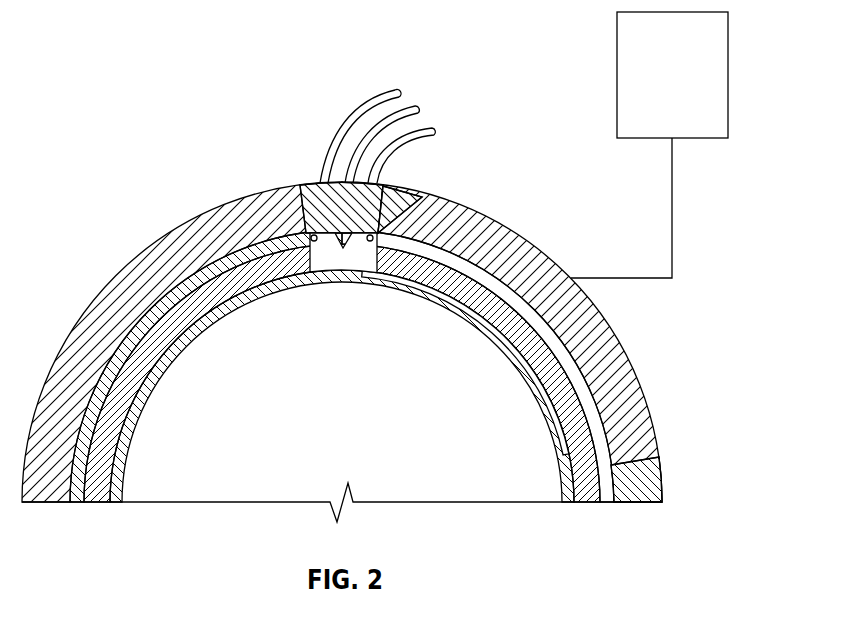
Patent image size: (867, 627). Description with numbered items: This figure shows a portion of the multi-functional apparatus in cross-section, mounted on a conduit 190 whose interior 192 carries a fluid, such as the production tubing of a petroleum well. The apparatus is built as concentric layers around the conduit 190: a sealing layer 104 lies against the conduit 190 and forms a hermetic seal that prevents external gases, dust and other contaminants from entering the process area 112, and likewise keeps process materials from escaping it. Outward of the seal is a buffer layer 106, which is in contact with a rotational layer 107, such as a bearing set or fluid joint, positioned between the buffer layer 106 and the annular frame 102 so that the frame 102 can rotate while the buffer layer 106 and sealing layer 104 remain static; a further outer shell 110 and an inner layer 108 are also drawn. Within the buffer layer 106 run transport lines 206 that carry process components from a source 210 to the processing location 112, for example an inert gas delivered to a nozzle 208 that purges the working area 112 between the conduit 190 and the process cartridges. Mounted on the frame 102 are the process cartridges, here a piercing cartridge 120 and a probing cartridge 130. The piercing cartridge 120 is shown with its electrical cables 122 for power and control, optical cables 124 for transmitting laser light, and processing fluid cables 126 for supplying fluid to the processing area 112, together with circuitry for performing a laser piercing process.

The frame 102 is at (612, 325).
The sealing layer 104 is at (170, 345).
The buffer layer 106 is at (532, 357).
The rotational layer 107 is at (585, 396).
The inner conductive layer 108 is at (487, 327).
The outer shell 110 is at (182, 230).
The process area 112 is at (345, 270).
The piercing cartridge 120 is at (315, 186).
The electrical cables 122 is at (366, 100).
The optical cables 124 is at (408, 106).
The processing fluid cables 126 is at (400, 146).
The probing cartridge 130 is at (652, 480).
The conduit 190 is at (133, 417).
The interior 192 is at (517, 478).
The transport lines 206 is at (673, 198).
The nozzle 208 is at (422, 197).
The source 210 is at (729, 76).